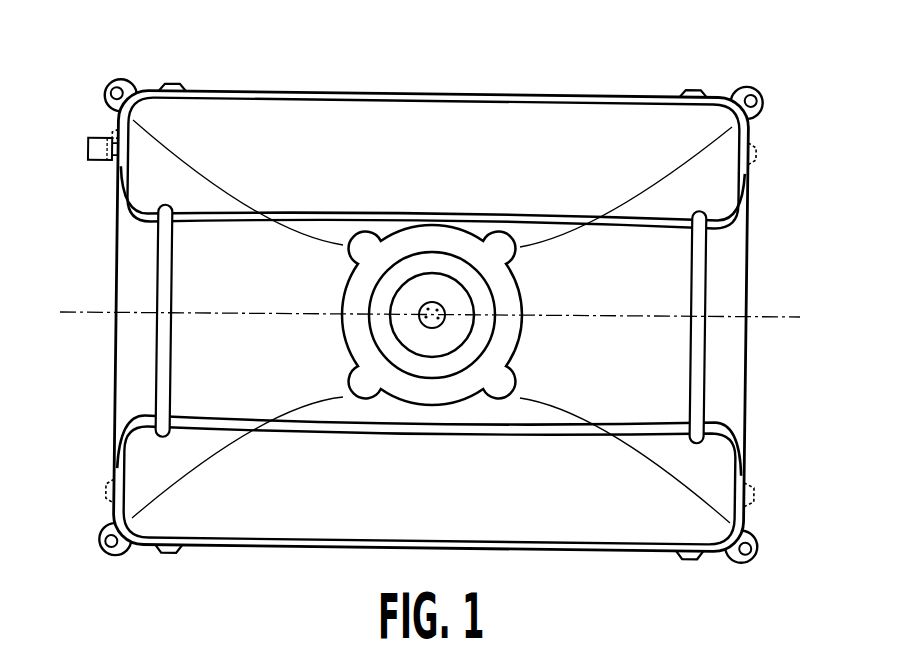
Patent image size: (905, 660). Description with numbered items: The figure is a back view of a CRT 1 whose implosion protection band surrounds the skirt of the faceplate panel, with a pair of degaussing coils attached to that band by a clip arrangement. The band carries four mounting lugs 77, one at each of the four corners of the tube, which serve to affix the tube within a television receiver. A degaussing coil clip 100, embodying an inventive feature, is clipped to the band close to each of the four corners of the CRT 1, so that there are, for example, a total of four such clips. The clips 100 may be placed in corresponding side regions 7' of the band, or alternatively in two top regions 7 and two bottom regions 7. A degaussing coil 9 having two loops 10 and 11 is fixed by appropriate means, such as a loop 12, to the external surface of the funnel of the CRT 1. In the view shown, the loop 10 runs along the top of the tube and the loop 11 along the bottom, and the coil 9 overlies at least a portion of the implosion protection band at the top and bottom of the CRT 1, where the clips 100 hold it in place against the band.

The CRT 1 is at (771, 282).
The top region or bottom region 7 is at (437, 313).
The side region 7' is at (421, 298).
The degaussing coil 9 is at (120, 180).
The loop 10 is at (438, 213).
The loop 11 is at (387, 428).
The loop 12 is at (160, 362).
The mounting lug 77 is at (117, 80).
The degaussing coil clip 100 is at (88, 152).